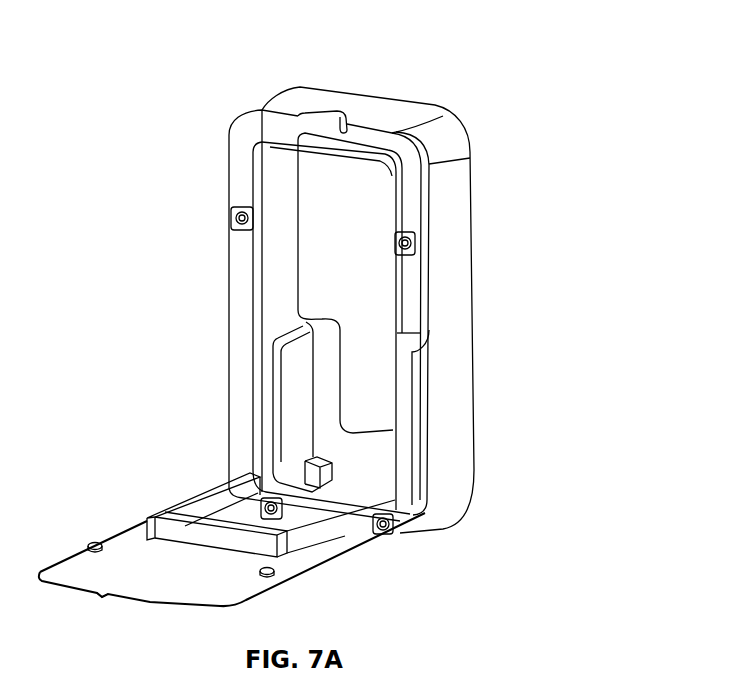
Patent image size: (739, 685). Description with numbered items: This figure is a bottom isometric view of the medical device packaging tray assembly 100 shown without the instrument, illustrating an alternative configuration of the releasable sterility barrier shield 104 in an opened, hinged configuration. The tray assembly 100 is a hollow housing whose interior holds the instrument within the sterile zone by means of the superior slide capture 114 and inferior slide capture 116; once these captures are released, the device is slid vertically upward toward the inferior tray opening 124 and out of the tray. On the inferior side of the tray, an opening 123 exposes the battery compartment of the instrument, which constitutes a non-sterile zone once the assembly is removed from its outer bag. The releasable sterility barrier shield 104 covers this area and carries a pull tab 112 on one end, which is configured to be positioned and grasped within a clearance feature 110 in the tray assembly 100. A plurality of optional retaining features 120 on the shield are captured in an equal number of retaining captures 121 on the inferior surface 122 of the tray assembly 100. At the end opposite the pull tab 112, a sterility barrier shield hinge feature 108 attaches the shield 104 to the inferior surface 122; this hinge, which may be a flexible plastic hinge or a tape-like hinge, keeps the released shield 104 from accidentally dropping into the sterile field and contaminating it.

The medical device packaging tray assembly 100 is at (329, 320).
The releasable sterility barrier shield 104 is at (231, 550).
The sterility barrier shield hinge feature 108 is at (413, 508).
The clearance feature 110 is at (344, 111).
The pull tab 112 is at (101, 595).
The superior slide capture 114 is at (327, 337).
The inferior slide capture 116 is at (317, 532).
The retaining feature 120 is at (95, 541).
The retaining capture 121 is at (235, 220).
The inferior surface 122 is at (407, 302).
The opening 123 is at (230, 513).
The inferior tray opening 124 is at (325, 207).